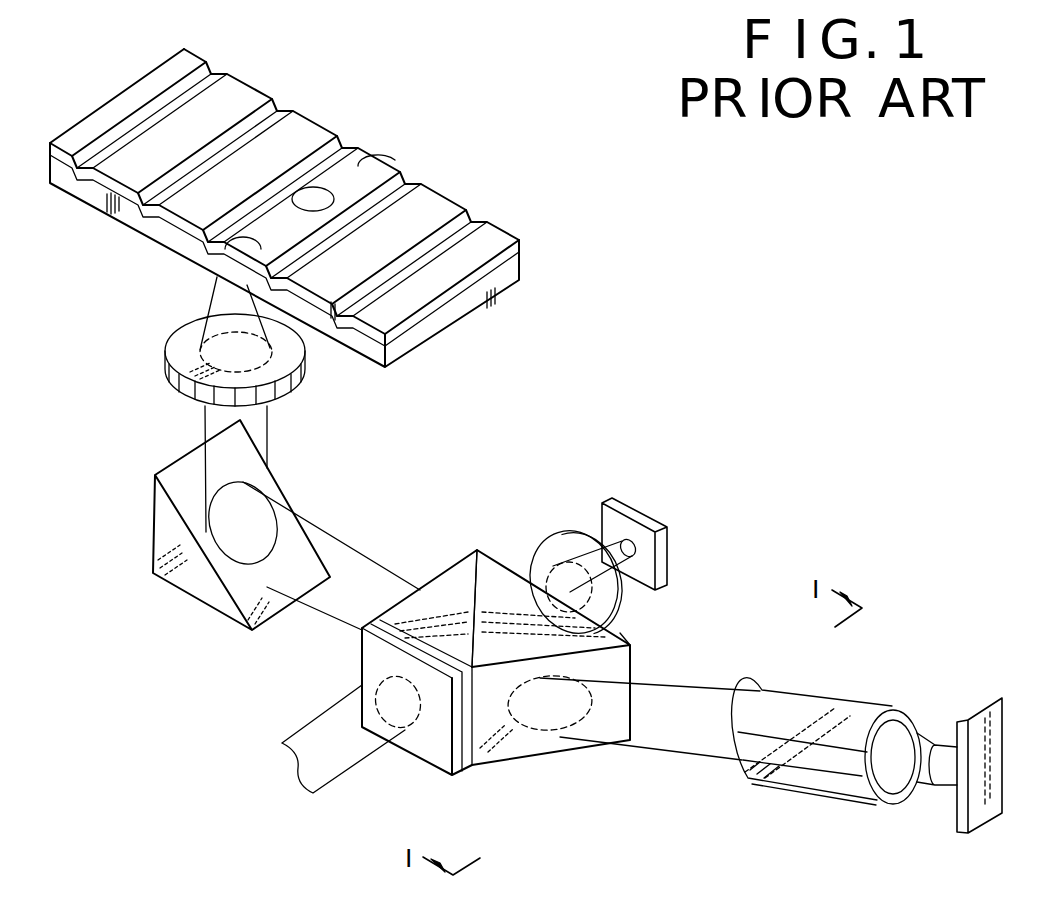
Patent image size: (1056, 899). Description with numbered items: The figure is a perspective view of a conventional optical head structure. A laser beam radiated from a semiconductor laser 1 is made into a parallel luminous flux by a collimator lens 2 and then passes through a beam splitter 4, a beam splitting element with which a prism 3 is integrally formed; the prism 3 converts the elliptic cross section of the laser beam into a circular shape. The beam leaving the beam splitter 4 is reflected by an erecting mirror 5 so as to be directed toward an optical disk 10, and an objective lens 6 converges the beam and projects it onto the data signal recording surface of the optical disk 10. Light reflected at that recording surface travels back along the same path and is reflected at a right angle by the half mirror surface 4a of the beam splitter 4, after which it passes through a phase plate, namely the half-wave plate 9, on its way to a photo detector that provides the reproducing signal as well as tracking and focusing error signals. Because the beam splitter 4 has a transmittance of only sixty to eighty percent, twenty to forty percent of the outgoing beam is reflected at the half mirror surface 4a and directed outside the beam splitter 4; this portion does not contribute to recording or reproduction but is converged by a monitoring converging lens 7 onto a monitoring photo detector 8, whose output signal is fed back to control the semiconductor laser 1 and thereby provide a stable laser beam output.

The semiconductor laser 1 is at (997, 723).
The collimator lens 2 is at (848, 707).
The prism 3 is at (688, 623).
The beam splitter 4 is at (442, 597).
The half mirror surface 4a is at (493, 557).
The erecting mirror 5 is at (165, 527).
The objective lens 6 is at (172, 340).
The monitoring converging lens 7 is at (542, 550).
The monitoring photo detector 8 is at (633, 512).
The (1/2)λ plate 9 is at (425, 740).
The optical disk 10 is at (480, 297).